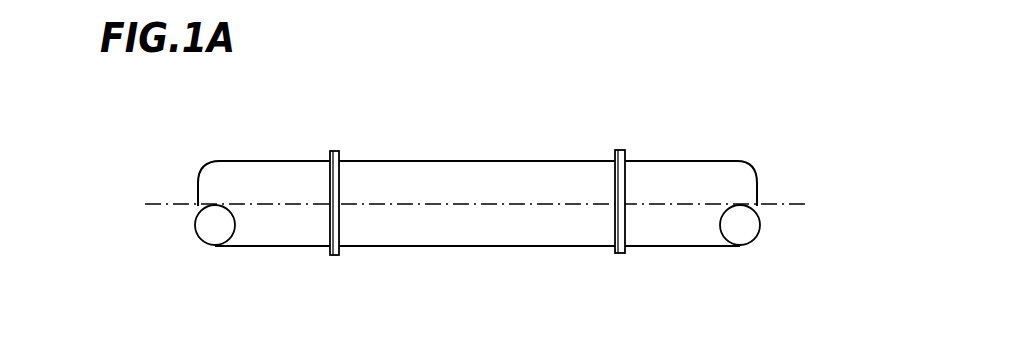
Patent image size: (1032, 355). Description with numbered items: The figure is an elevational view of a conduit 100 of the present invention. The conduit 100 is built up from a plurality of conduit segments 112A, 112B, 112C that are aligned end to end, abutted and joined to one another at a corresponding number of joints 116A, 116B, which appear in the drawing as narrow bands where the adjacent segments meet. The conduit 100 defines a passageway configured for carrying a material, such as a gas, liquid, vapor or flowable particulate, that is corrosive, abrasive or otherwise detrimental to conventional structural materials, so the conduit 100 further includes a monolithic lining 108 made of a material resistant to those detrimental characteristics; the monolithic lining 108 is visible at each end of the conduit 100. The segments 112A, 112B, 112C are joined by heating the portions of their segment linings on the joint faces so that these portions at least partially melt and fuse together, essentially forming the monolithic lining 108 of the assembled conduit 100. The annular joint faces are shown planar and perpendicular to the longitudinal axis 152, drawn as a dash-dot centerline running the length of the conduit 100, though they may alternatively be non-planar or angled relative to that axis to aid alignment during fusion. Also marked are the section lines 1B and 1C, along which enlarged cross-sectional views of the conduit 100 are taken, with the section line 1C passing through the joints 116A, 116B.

The conduit 100 is at (661, 50).
The monolithic lining 108 is at (215, 224).
The conduit segment 112A is at (254, 148).
The conduit segment 112B is at (533, 146).
The conduit segment 112C is at (724, 147).
The joint 116A is at (333, 138).
The joint 116B is at (623, 268).
The longitudinal axis 152 is at (785, 203).
The section line 1B— 1B is at (477, 145).
The section line 1C— 1C is at (320, 175).